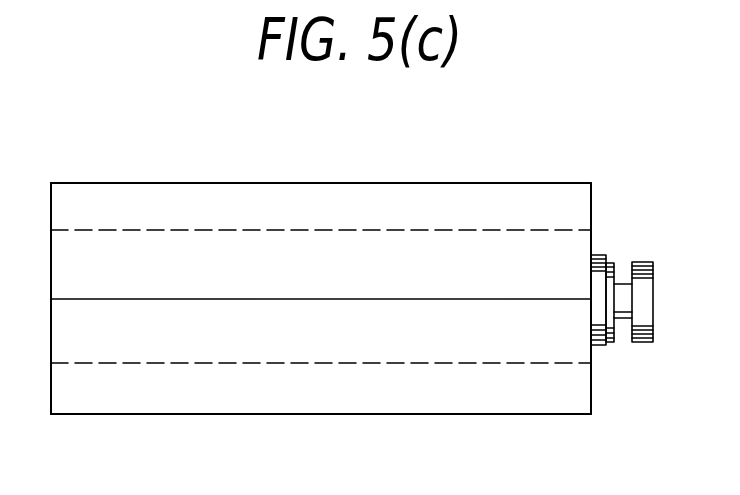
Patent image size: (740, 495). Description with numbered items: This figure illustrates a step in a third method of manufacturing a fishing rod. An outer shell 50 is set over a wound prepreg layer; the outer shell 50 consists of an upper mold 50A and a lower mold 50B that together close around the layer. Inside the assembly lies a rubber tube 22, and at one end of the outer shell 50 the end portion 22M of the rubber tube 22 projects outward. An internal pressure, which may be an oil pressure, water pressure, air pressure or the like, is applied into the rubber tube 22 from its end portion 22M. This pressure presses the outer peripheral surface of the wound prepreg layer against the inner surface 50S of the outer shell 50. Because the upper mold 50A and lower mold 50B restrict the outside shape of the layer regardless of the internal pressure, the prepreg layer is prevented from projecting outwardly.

The outer shell 50 is at (330, 131).
The upper mold 50A is at (298, 208).
The lower mold 50B is at (197, 321).
The inner surface 50S is at (358, 237).
The rubber tube 22 is at (593, 283).
The end portion 22M is at (617, 268).